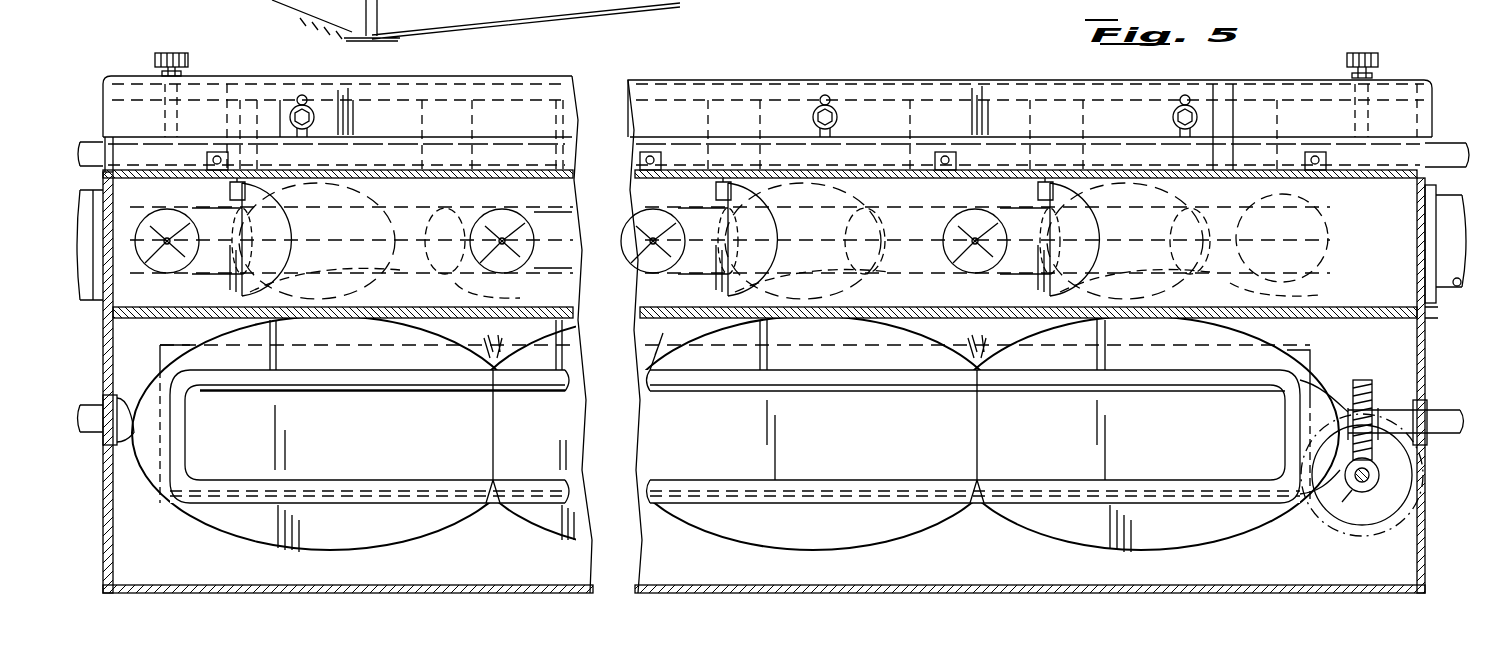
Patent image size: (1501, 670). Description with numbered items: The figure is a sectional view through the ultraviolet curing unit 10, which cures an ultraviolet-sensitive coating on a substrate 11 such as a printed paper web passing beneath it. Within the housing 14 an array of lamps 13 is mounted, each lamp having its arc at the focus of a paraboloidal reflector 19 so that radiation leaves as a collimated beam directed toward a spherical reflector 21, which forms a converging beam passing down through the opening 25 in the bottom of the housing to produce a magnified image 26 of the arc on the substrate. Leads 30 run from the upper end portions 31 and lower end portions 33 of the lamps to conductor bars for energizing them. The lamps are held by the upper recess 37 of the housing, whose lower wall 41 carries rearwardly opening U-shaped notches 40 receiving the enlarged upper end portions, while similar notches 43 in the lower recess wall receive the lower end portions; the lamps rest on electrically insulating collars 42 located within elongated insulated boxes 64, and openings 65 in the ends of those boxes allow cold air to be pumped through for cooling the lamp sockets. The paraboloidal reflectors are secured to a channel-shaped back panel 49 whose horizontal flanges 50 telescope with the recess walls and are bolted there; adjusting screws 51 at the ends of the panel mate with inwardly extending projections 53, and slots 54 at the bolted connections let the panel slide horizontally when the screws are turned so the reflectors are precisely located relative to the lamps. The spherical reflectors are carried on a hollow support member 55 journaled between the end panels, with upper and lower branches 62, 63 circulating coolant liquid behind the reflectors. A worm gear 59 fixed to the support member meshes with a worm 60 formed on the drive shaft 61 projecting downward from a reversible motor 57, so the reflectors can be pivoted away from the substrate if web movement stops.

The unit 10 is at (1300, 42).
The substrate 11 is at (276, 4).
The lamp 13 is at (166, 322).
The housing 14 is at (1288, 597).
The paraboloidal reflector 19 is at (386, 171).
The spherical reflector 21 is at (262, 540).
The opening 25 is at (382, 498).
The magnified image 26 is at (606, 9).
The leads 30 is at (571, 241).
The upper end portion 31 is at (197, 272).
The lower end portion 33 is at (478, 282).
The upper recess 37 is at (341, 319).
The U-shaped notches 40 is at (205, 190).
The lower wall 41 is at (505, 196).
The electrically insulating collars 42 is at (302, 248).
The notches 43 is at (440, 207).
The back panel 49 is at (480, 78).
The horizontal flanges 50 is at (630, 116).
The adjusting screws 51 is at (188, 64).
The projections 53 is at (166, 131).
The slots 54 is at (305, 96).
The support member 55 is at (1394, 405).
The motor 57 is at (1422, 534).
The worm gear 59 is at (1363, 380).
The worm 60 is at (1358, 503).
The drive shaft 61 is at (1378, 470).
The upper branch 62 is at (405, 390).
The lower branch 63 is at (470, 478).
The boxes 64 is at (1428, 314).
The openings 65 is at (1430, 226).